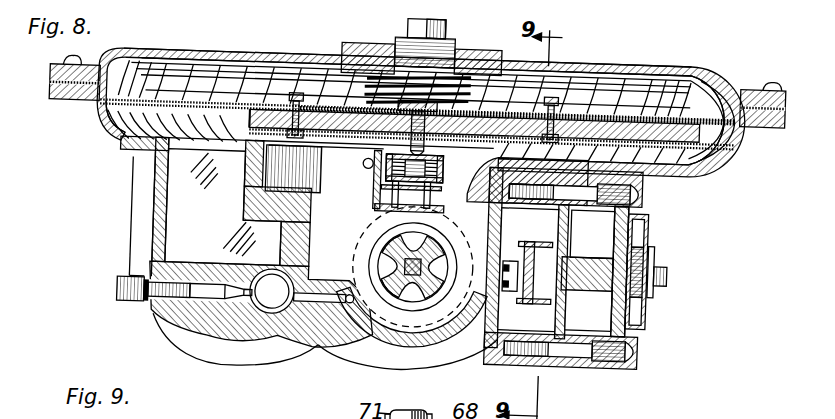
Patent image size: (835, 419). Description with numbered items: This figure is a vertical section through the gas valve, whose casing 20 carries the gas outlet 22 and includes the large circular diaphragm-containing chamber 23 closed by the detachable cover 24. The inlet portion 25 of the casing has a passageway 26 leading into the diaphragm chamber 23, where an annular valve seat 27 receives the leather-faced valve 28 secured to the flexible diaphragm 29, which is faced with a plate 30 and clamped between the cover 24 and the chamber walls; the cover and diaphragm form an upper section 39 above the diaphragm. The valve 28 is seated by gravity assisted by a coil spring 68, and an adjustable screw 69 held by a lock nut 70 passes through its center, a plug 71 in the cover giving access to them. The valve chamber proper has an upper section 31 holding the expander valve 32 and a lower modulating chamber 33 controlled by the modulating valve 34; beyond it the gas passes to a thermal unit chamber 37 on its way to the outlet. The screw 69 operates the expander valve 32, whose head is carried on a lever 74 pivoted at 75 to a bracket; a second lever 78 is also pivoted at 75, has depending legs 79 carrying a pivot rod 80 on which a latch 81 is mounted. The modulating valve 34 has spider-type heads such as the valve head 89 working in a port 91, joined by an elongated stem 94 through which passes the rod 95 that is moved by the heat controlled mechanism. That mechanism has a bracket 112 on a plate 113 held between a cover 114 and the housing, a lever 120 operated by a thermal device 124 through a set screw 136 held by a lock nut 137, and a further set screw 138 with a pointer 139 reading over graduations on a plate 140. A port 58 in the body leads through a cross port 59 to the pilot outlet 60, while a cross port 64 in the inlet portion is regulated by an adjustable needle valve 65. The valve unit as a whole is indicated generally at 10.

The valve unit 10 is at (397, 103).
The casing 20 is at (708, 170).
The gas outlet 22 is at (415, 333).
The diaphragm-containing chamber 23 is at (716, 158).
The cover 24 is at (683, 68).
The inlet portion 25 is at (157, 225).
The passageway 26 is at (182, 165).
The annular valve seat 27 is at (590, 148).
The leather-faced valve 28 is at (248, 126).
The flexible diaphragm 29 is at (133, 134).
The plate 30 is at (190, 100).
The upper section 31 is at (507, 130).
The expander valve 32 is at (366, 179).
The modulating chamber 33 is at (400, 340).
The modulating valve 34 is at (393, 290).
The thermal unit chamber 37 is at (497, 335).
The upper section 39 is at (262, 68).
The port 58 is at (348, 300).
The cross port 59 is at (307, 297).
The pilot outlet 60 is at (263, 310).
The cross port 64 is at (242, 293).
The adjustable needle valve 65 is at (123, 294).
The coil spring 68 is at (463, 60).
The adjustable screw 69 is at (377, 113).
The lock nut 70 is at (415, 61).
The plug 71 is at (442, 30).
The lever 74 is at (448, 196).
The pivot 75 is at (366, 164).
The second lever 78 is at (455, 117).
The legs 79 is at (383, 212).
The pivot rod 80 is at (434, 224).
The latch 81 is at (378, 198).
The valve head 89 is at (393, 253).
The valve port 91 is at (437, 335).
The elongated stem 94 is at (410, 267).
The rod 95 is at (393, 283).
The bracket 112 is at (566, 253).
The plate 113 is at (566, 238).
The cover 114 is at (647, 303).
The lever 120 is at (568, 300).
The thermal device 124 is at (498, 206).
The set screw 136 is at (508, 243).
The lock nut 137 is at (513, 262).
The set screw 138 is at (672, 280).
The pointer 139 is at (657, 259).
The plate 140 is at (651, 236).